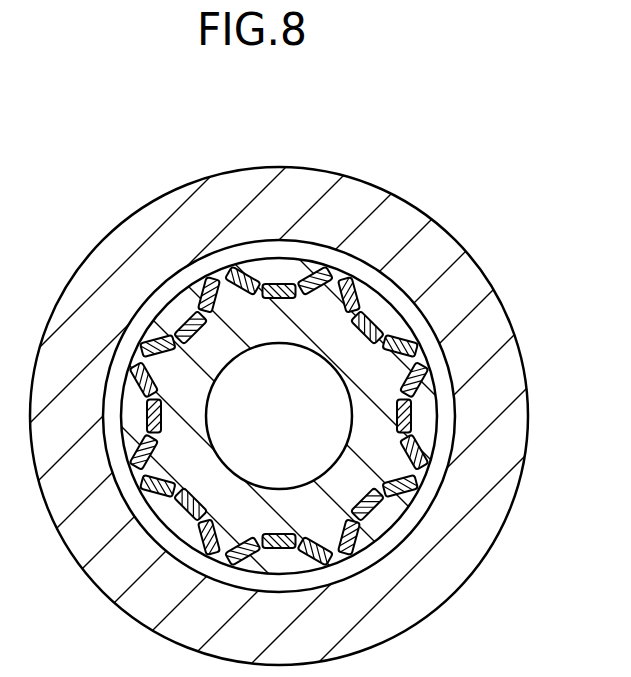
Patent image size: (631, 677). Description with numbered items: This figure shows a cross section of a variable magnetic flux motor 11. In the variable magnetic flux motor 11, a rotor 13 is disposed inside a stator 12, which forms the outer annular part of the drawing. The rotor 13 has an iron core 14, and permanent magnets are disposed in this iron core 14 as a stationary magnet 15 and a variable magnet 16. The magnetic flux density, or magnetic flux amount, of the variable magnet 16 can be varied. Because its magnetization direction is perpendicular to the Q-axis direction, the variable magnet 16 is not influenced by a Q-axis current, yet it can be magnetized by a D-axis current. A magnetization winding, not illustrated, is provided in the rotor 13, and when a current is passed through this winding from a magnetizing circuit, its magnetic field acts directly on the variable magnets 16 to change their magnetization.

The variable magnetic flux motor 11 is at (315, 338).
The stator 12 is at (512, 510).
The rotor 13 is at (315, 338).
The iron core 14 is at (395, 333).
The stationary magnet 15 is at (423, 360).
The variable magnet 16 is at (413, 403).